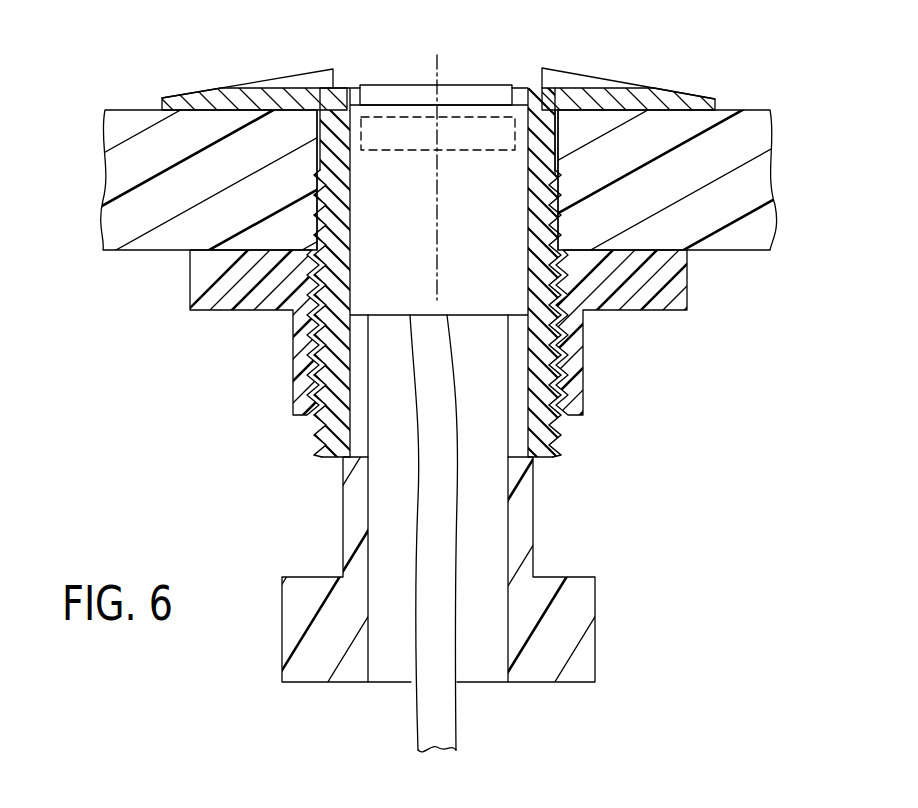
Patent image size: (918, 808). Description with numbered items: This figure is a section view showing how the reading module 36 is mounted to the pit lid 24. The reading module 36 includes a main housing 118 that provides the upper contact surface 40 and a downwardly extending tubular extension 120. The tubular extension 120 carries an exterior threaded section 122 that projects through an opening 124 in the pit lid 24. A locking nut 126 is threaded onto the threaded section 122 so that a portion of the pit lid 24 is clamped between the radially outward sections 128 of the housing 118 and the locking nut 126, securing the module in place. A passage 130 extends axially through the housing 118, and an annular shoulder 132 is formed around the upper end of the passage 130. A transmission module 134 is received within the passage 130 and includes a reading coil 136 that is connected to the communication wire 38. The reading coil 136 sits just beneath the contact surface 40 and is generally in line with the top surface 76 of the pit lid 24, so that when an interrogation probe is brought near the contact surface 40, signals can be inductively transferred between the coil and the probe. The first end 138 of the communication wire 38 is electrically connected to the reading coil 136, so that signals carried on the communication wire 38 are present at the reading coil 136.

The reading module 36 is at (613, 45).
The top surface of the pit lid 76 is at (128, 110).
The pit lid 24 is at (742, 135).
The radially outward sections of the housing 128 is at (218, 98).
The main housing 118 is at (278, 87).
The upper contact surface 40 is at (380, 83).
The annular shoulder 132 is at (518, 90).
The tubular extension 120 is at (323, 435).
The reading coil 136 is at (408, 115).
The transmission module 134 is at (463, 103).
The opening in the pit lid 124 is at (558, 163).
The locking nut 126 is at (213, 293).
The exterior threaded section 122 is at (555, 363).
The passage 130 is at (385, 667).
The communication wire 38 is at (440, 727).
The first end of the communication wire 138 is at (445, 425).